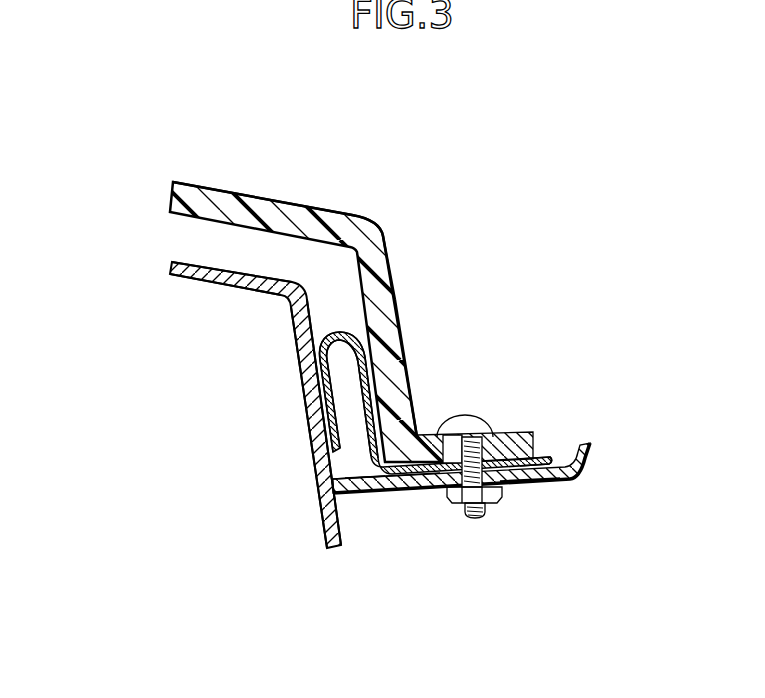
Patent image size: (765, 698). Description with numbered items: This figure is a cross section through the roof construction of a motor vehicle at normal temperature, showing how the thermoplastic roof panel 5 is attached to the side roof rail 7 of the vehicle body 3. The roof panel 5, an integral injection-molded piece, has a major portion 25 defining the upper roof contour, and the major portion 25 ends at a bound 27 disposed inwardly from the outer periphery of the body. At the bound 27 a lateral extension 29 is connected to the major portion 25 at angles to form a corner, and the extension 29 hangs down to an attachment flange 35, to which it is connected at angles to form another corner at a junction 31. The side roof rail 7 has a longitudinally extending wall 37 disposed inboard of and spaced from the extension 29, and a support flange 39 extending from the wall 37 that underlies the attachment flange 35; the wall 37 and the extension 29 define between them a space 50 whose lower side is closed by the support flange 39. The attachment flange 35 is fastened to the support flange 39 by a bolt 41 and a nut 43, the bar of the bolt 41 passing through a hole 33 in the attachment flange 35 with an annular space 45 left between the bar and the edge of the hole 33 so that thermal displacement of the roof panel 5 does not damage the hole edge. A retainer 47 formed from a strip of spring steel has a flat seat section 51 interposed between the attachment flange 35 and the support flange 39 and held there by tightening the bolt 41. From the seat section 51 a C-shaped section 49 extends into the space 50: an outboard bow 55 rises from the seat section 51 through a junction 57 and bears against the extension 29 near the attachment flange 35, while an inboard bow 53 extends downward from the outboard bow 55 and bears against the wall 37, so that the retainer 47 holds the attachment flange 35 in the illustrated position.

The vehicle body panel 3 is at (175, 255).
The roof panel 5 is at (240, 170).
The side roof rail 7 is at (213, 288).
The major portion 25 is at (290, 208).
The bound 27 is at (374, 233).
The lateral extension 29 is at (393, 323).
The junction 31 is at (424, 437).
The hole 33 is at (523, 431).
The attachment flange 35 is at (553, 457).
The longitudinally extending wall 37 is at (318, 458).
The support flange 39 is at (576, 485).
The bolt 41 is at (487, 418).
The nut 43 is at (482, 518).
The annular space 45 is at (533, 480).
The retainer 47 is at (340, 320).
The C-shaped section 49 is at (321, 352).
The space 50 is at (353, 453).
The seat section 51 is at (403, 482).
The inboard bow 53 is at (322, 410).
The outboard bow 55 is at (386, 383).
The junction 57 is at (361, 475).